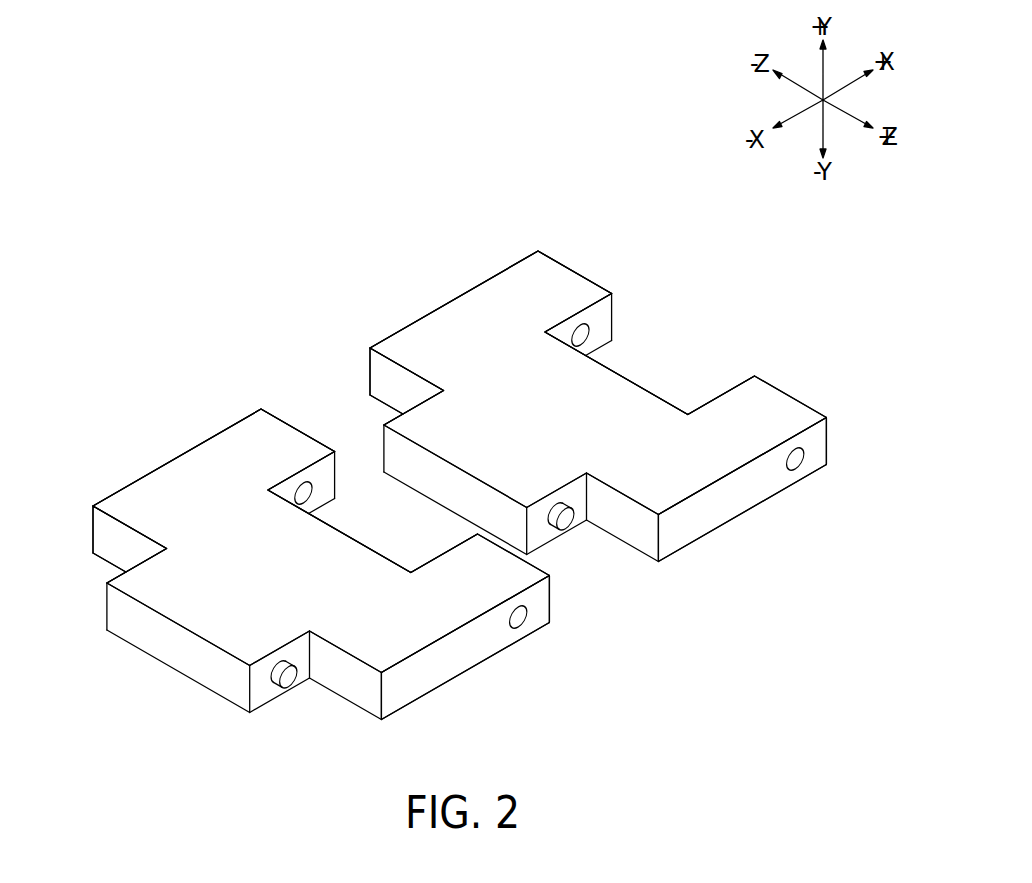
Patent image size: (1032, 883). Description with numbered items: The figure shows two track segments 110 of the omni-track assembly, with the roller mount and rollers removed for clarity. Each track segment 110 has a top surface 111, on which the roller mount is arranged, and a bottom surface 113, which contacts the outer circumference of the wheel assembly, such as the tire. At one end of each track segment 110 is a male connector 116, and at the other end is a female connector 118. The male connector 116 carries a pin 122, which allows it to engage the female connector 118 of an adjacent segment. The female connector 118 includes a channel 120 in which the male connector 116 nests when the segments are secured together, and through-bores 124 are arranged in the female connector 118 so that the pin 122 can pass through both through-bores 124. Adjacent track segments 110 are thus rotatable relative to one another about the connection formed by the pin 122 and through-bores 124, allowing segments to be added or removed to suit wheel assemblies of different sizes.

The track segment 110 is at (483, 678).
The top surface 111 is at (216, 627).
The bottom surface 113 is at (433, 693).
The male connector 116 is at (125, 573).
The female connector 118 is at (261, 409).
The channel 120 is at (382, 557).
The pin 122 is at (291, 680).
The through-bores 124 is at (312, 493).